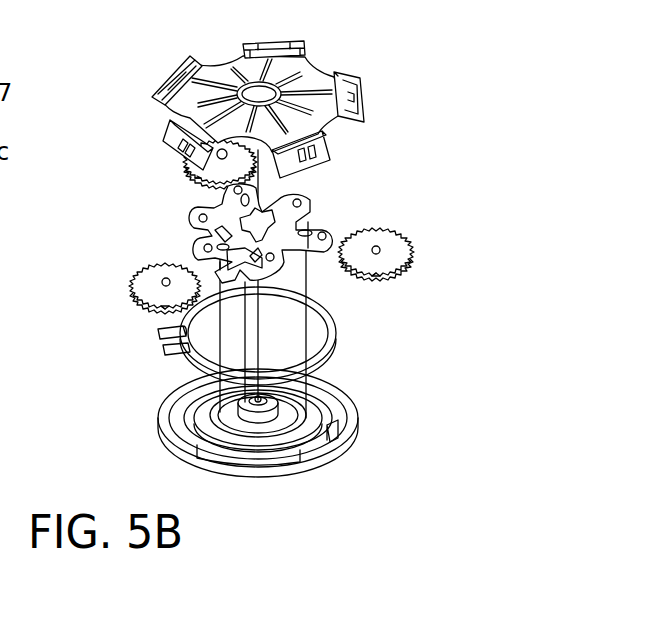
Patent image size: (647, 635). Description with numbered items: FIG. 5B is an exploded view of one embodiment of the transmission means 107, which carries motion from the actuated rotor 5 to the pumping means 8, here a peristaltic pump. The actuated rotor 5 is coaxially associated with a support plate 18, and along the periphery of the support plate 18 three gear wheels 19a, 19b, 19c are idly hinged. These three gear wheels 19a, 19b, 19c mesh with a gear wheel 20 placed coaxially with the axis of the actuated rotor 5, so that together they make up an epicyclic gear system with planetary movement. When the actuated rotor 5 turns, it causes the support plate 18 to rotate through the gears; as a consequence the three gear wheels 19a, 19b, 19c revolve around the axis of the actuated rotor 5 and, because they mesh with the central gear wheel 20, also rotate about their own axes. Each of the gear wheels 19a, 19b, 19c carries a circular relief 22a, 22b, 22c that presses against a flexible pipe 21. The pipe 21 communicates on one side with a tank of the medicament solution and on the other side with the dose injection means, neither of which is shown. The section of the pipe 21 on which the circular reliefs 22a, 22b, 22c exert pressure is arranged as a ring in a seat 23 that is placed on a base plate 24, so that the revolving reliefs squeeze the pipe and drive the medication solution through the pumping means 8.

The actuated rotor 5 is at (312, 82).
The pumping means 8 is at (148, 241).
The support plate 18 is at (305, 213).
The gear wheel 19a is at (397, 250).
The gear wheel 19b is at (210, 180).
The gear wheel 19c is at (152, 279).
The circular relief 22a is at (378, 278).
The circular relief 22b is at (215, 185).
The circular relief 22c is at (160, 312).
The flexible pipe 21 is at (335, 338).
The gear wheel 20 is at (280, 398).
The base plate 24 is at (345, 440).
The seat 23 is at (300, 435).
The transmission means 107 is at (154, 358).